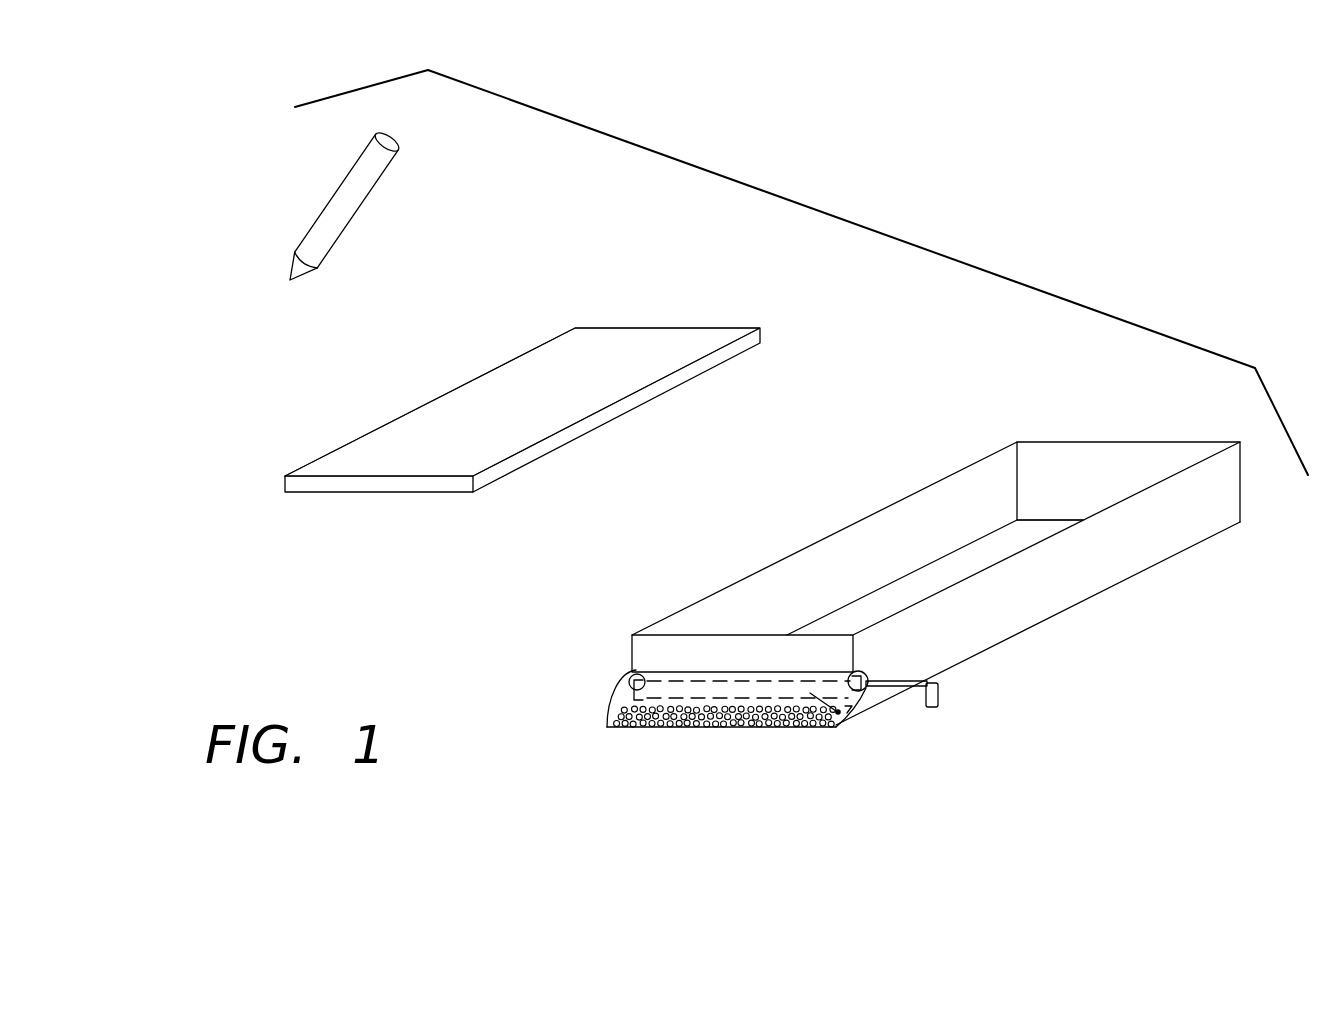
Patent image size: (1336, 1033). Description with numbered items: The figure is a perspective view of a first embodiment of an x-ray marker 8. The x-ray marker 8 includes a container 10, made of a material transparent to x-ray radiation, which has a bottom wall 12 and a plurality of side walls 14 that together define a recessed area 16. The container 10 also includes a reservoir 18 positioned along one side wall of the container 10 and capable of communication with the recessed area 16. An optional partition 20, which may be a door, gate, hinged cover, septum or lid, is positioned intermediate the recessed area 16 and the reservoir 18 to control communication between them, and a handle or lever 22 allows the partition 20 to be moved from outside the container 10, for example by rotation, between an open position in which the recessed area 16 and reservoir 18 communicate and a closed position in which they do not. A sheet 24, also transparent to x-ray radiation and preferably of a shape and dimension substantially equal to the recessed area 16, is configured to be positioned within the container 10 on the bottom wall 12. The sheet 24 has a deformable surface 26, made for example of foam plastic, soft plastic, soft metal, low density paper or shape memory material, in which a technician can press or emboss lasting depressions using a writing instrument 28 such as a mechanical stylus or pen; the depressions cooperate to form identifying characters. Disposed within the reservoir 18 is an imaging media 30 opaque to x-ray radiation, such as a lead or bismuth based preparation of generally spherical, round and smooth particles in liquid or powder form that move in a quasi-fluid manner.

The x-ray marker 8 is at (1045, 259).
The container 10 is at (1082, 626).
The bottom wall 12 is at (883, 602).
The side walls 14 is at (910, 512).
The recessed area 16 is at (985, 505).
The reservoir 18 is at (628, 693).
The partition 20 is at (840, 714).
The handle or lever 22 is at (940, 695).
The sheet 24 is at (405, 507).
The deformable surface 26 is at (480, 397).
The writing instrument 28 is at (352, 203).
The imaging media 30 is at (712, 728).